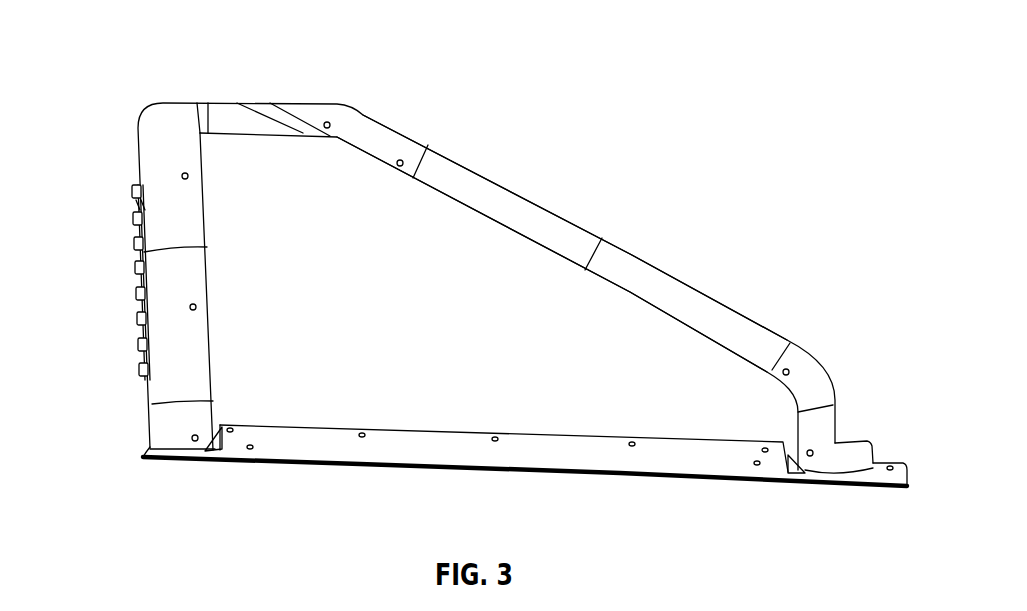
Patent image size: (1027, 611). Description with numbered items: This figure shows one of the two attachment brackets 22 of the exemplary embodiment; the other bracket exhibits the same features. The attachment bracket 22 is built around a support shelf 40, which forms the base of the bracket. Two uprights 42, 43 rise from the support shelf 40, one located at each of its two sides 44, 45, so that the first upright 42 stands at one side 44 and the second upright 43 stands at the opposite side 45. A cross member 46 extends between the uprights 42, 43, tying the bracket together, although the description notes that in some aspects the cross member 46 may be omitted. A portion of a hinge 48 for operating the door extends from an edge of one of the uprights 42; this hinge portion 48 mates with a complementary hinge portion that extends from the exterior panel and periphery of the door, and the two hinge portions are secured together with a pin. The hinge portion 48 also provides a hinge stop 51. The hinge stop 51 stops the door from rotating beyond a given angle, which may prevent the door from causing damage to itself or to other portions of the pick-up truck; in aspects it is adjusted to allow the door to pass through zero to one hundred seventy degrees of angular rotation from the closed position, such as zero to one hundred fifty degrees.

The attachment bracket 22 is at (138, 33).
The support shelf 40 is at (610, 457).
The upright 42 is at (147, 150).
The upright 43 is at (550, 223).
The side of the support shelf 44 is at (210, 443).
The side of the support shelf 45 is at (807, 477).
The cross member 46 is at (218, 117).
The hinge portion 48 is at (138, 292).
The hinge stop 51 is at (133, 203).